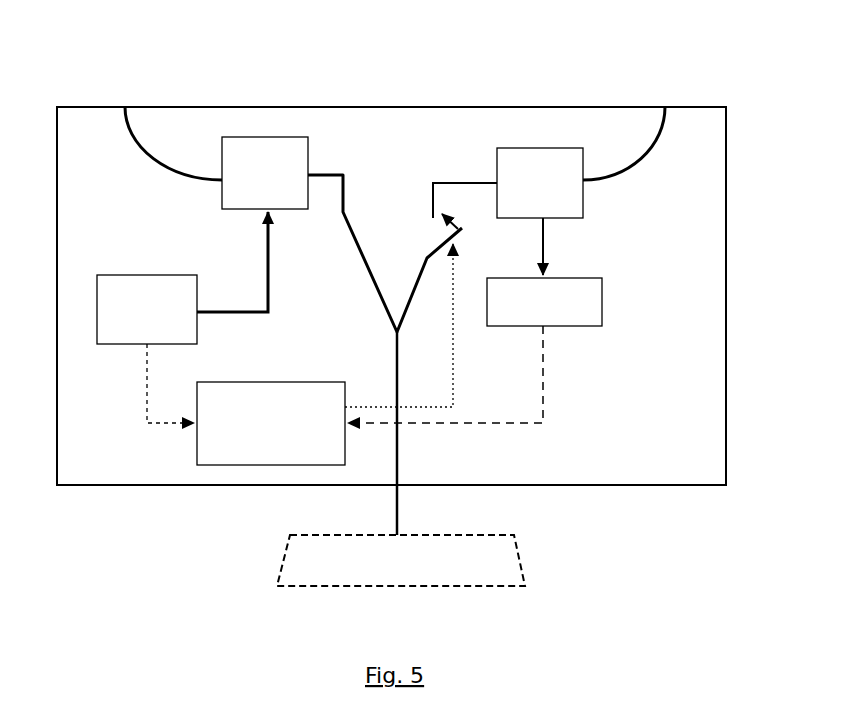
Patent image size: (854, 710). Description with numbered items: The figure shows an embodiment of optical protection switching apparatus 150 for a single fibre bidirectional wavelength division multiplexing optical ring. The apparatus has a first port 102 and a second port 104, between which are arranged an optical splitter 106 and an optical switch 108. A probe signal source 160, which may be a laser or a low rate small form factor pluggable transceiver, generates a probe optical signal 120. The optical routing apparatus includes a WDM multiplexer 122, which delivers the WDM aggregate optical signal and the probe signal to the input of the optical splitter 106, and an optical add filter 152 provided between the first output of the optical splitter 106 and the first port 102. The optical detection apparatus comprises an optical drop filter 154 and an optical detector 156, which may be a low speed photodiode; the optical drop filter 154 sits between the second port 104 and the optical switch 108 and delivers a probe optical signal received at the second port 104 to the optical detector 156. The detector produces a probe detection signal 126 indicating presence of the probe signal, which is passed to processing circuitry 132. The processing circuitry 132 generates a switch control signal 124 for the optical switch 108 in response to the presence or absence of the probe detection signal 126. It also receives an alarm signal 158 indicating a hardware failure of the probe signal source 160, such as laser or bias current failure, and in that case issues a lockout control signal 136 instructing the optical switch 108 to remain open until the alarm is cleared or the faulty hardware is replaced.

The first port 102 is at (121, 101).
The second port 104 is at (668, 99).
The optical splitter 106 is at (384, 325).
The optical switch 108 is at (420, 230).
The probe optical signal 120 is at (267, 248).
The WDM multiplexer 122 is at (320, 578).
The switch control signal 124 is at (433, 327).
The probe detection signal 126 is at (545, 372).
The processing circuitry 132 is at (222, 453).
The lockout control signal 136 is at (455, 323).
The optical protection switching apparatus 150 is at (659, 460).
The optical add filter 152 is at (233, 192).
The optical drop filter 154 is at (565, 200).
The optical detector 156 is at (575, 318).
The alarm signal 158 is at (143, 400).
The probe signal source 160 is at (130, 335).